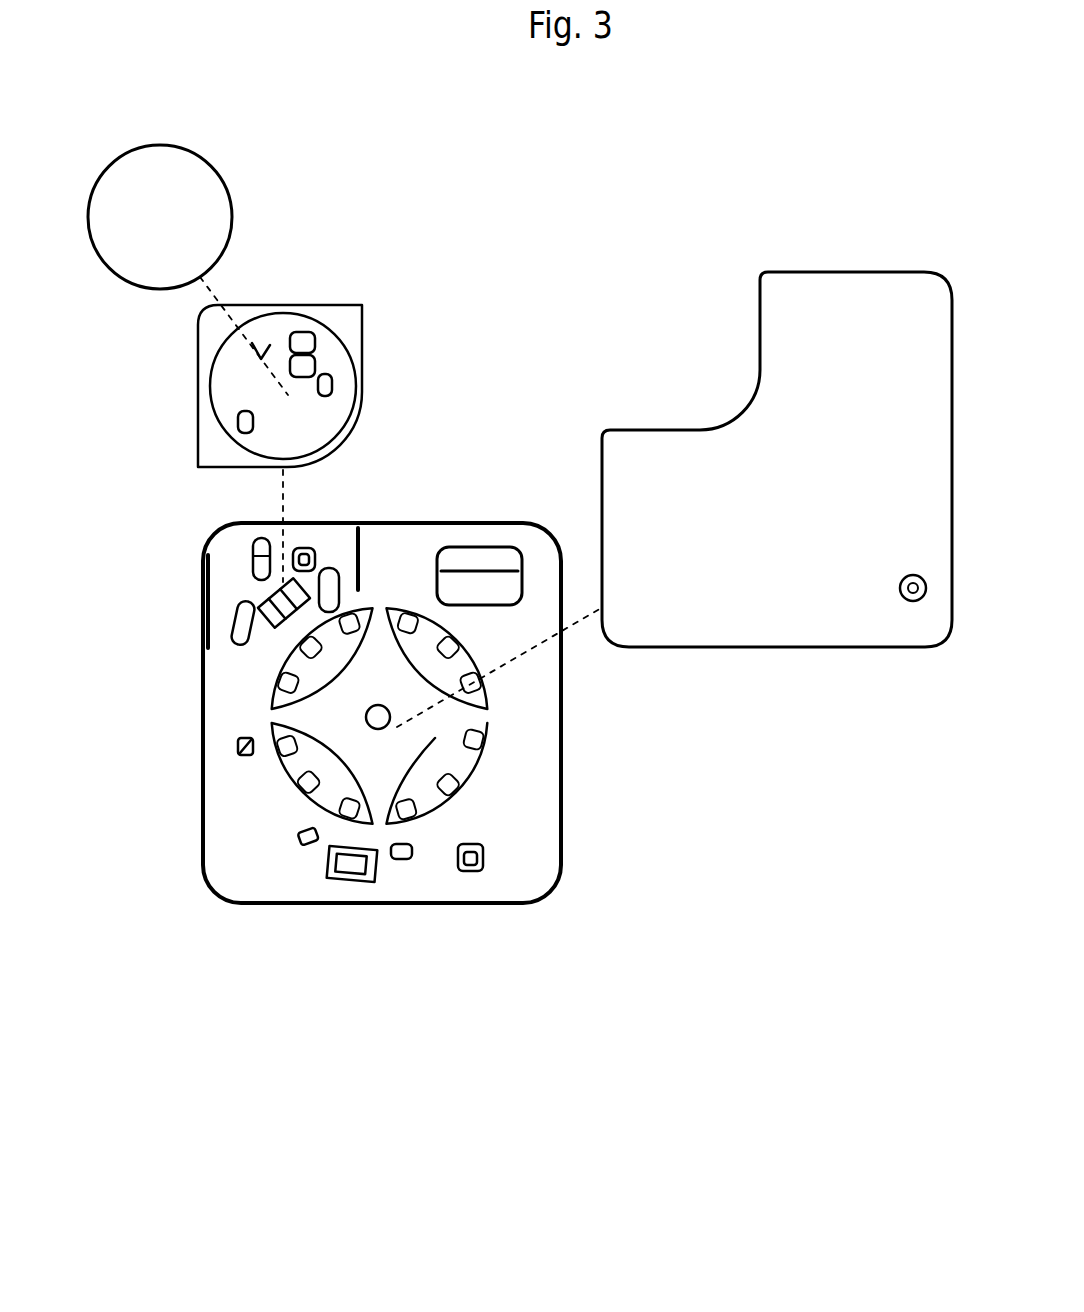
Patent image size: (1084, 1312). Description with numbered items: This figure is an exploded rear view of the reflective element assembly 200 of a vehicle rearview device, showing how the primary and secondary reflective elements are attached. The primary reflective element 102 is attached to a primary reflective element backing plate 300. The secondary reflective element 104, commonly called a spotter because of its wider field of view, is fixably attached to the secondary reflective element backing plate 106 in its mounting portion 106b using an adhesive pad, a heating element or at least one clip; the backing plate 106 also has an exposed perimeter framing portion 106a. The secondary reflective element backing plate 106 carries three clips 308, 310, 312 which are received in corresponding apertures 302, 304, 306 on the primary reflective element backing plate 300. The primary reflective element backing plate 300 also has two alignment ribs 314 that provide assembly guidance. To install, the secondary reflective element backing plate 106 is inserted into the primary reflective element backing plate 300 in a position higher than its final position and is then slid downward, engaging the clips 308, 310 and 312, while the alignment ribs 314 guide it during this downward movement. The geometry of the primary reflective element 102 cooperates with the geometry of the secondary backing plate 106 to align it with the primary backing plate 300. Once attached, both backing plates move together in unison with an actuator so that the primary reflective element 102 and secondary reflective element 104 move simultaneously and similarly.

The primary reflective element 102 is at (758, 597).
The secondary reflective element 104 is at (165, 185).
The secondary reflective element backing plate 106 is at (316, 318).
The exposed perimeter framing portion 106a is at (347, 318).
The mounting portion 106b is at (332, 355).
The reflective element assembly 200 is at (455, 1040).
The primary reflective element backing plate 300 is at (399, 706).
The aperture 302 is at (243, 633).
The aperture 304 is at (257, 553).
The aperture 306 is at (331, 577).
The clip 308 is at (247, 413).
The clip 310 is at (257, 343).
The clip 312 is at (332, 385).
The alignment rib 314 is at (363, 563).